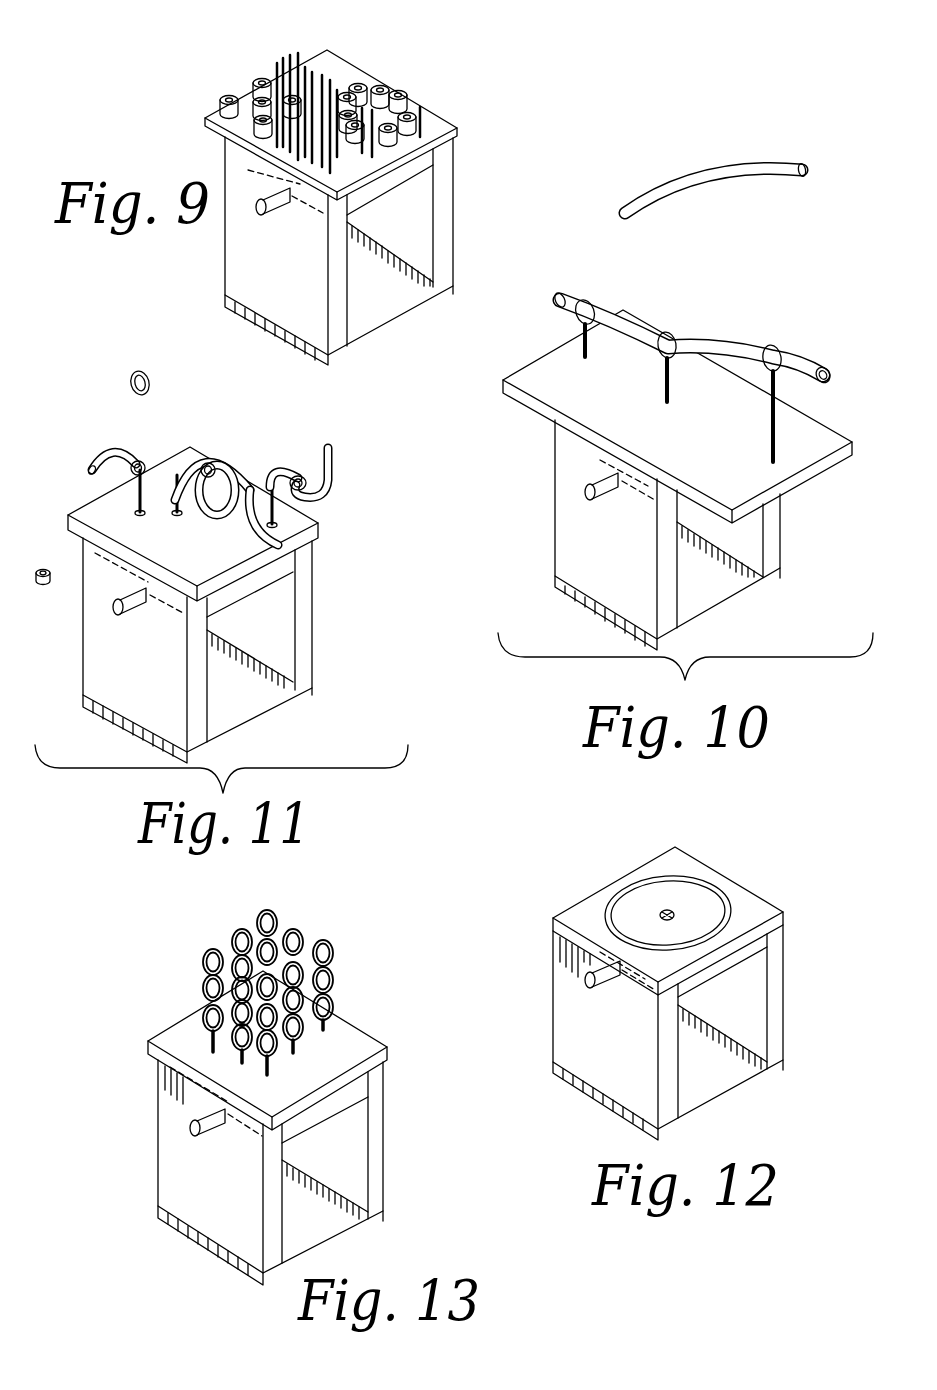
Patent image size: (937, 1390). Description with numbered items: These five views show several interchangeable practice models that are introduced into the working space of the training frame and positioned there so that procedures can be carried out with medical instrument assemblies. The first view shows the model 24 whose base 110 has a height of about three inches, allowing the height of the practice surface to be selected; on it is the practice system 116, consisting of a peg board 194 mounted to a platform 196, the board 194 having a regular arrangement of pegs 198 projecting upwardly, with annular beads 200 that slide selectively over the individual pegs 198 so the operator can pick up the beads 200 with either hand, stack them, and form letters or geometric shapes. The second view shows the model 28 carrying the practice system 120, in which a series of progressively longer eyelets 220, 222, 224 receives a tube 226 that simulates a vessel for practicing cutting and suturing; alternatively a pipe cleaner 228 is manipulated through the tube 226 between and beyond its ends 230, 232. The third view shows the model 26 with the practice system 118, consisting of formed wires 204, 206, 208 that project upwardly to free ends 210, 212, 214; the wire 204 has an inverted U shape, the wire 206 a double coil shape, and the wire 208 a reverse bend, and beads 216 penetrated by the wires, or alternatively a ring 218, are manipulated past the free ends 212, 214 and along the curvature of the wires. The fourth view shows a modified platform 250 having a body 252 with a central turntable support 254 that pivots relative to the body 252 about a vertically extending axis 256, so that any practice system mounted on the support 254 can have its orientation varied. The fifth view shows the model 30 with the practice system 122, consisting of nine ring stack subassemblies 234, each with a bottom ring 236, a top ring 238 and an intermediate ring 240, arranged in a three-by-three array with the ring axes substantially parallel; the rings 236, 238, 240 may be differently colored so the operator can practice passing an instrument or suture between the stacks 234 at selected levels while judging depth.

In FIG. 9, the model 24 is at (471, 223).
In FIG. 9, the base 110 is at (448, 188).
In FIG. 9, the practice system 116 is at (405, 75).
In FIG. 9, the peg board 194 is at (440, 122).
In FIG. 9, the platform 196 is at (388, 192).
In FIG. 9, the pegs 198 is at (362, 88).
In FIG. 9, the annular beads 200 is at (232, 93).
In FIG. 10, the model 28 is at (855, 446).
In FIG. 10, the practice system 120 is at (793, 350).
In FIG. 10, the eyelet 220 is at (588, 303).
In FIG. 10, the eyelet 222 is at (668, 333).
In FIG. 10, the eyelet 224 is at (775, 346).
In FIG. 10, the tube 226 is at (709, 342).
In FIG. 10, the pipe cleaner 228 is at (757, 178).
In FIG. 10, the end 230 is at (560, 307).
In FIG. 10, the end 232 is at (830, 370).
In FIG. 11, the model 26 is at (340, 598).
In FIG. 11, the practice system 118 is at (260, 440).
In FIG. 11, the formed wire 204 is at (102, 450).
In FIG. 11, the formed wire 206 is at (210, 465).
In FIG. 11, the formed wire 208 is at (335, 462).
In FIG. 11, the free end 210 is at (92, 470).
In FIG. 11, the free end 212 is at (265, 532).
In FIG. 11, the free end 214 is at (326, 449).
In FIG. 11, the beads 216 is at (140, 462).
In FIG. 11, the ring 218 is at (130, 382).
In FIG. 12, the platform 250 is at (772, 922).
In FIG. 12, the body 252 is at (746, 905).
In FIG. 12, the turntable support 254 is at (697, 895).
In FIG. 12, the axis 256 is at (664, 906).
In FIG. 13, the model 30 is at (403, 1117).
In FIG. 13, the practice system 122 is at (340, 970).
In FIG. 13, the ring stack subassemblies 234 is at (270, 1063).
In FIG. 13, the bottom ring 236 is at (203, 1013).
In FIG. 13, the top ring 238 is at (210, 950).
In FIG. 13, the intermediate ring 240 is at (203, 986).